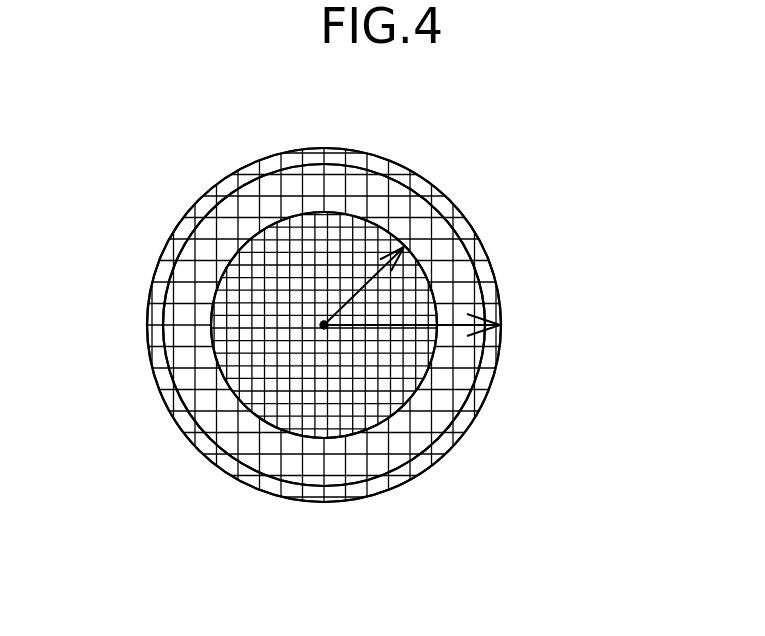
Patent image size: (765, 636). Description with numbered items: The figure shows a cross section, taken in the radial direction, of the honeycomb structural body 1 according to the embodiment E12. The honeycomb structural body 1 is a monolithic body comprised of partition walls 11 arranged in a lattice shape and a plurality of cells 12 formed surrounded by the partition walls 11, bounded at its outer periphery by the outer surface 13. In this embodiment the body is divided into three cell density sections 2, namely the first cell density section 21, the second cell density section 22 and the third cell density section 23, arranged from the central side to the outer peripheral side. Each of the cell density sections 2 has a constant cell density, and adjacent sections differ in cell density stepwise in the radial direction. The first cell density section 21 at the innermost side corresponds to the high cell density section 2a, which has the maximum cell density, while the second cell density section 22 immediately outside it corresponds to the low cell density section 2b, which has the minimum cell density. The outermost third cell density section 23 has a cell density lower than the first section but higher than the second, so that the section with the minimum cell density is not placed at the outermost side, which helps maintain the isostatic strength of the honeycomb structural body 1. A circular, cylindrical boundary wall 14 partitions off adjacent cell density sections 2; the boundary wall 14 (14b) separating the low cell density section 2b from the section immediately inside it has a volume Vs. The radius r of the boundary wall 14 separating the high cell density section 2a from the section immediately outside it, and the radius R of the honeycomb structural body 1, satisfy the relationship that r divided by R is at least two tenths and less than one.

The honeycomb structural body 1 is at (396, 288).
The embodiment E12 is at (502, 161).
The cell density sections 2 is at (261, 383).
The first cell density section 21 is at (307, 380).
The second cell density section 22 is at (208, 397).
The third cell density section 23 is at (153, 342).
The high cell density section 2a is at (365, 343).
The low cell density section 2b is at (443, 397).
The partition walls 11 is at (294, 195).
The cells 12 is at (212, 227).
The outer surface 13 is at (493, 252).
The boundary wall 14 is at (340, 504).
The boundary wall 14b is at (393, 410).
The radius of boundary wall r is at (380, 258).
The radius of honeycomb structural body R is at (462, 317).